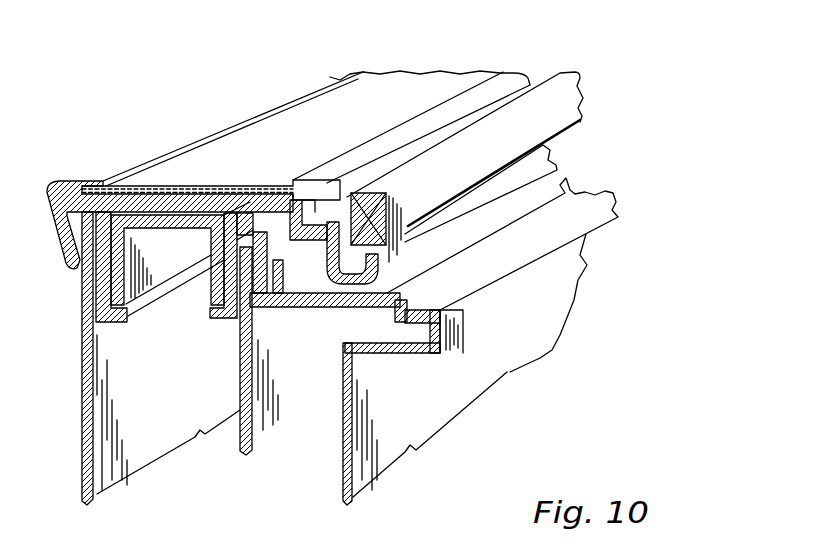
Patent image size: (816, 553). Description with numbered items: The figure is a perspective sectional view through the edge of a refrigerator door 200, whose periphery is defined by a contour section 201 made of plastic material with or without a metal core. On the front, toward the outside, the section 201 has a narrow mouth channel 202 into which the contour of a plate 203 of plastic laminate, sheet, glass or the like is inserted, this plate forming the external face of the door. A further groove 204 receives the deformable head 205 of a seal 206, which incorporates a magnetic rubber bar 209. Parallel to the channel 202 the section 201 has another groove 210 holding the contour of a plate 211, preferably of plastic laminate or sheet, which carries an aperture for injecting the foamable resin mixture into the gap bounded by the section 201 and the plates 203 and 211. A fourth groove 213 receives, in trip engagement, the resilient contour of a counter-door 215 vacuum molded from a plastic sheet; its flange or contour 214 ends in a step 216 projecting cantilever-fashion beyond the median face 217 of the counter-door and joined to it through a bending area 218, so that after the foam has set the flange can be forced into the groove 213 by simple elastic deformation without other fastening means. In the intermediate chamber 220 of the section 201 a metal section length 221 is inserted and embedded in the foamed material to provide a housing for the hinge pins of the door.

The door 200 is at (80, 342).
The section 201 is at (501, 68).
The narrow mouth channel 202 is at (72, 212).
The plate 203 is at (82, 425).
The groove 204 is at (275, 192).
The deformable head 205 is at (294, 183).
The seal 206 is at (593, 89).
The magnetic rubber bar 209 is at (395, 207).
The groove 210 is at (240, 318).
The plate 211 is at (240, 437).
The fourth groove 213 is at (270, 306).
The flange or contour 214 is at (314, 300).
The counter-door 215 is at (619, 192).
The step 216 is at (543, 177).
The median face 217 is at (432, 418).
The bending area 218 is at (427, 340).
The intermediate chamber 220 is at (117, 212).
The section length 221 is at (160, 225).